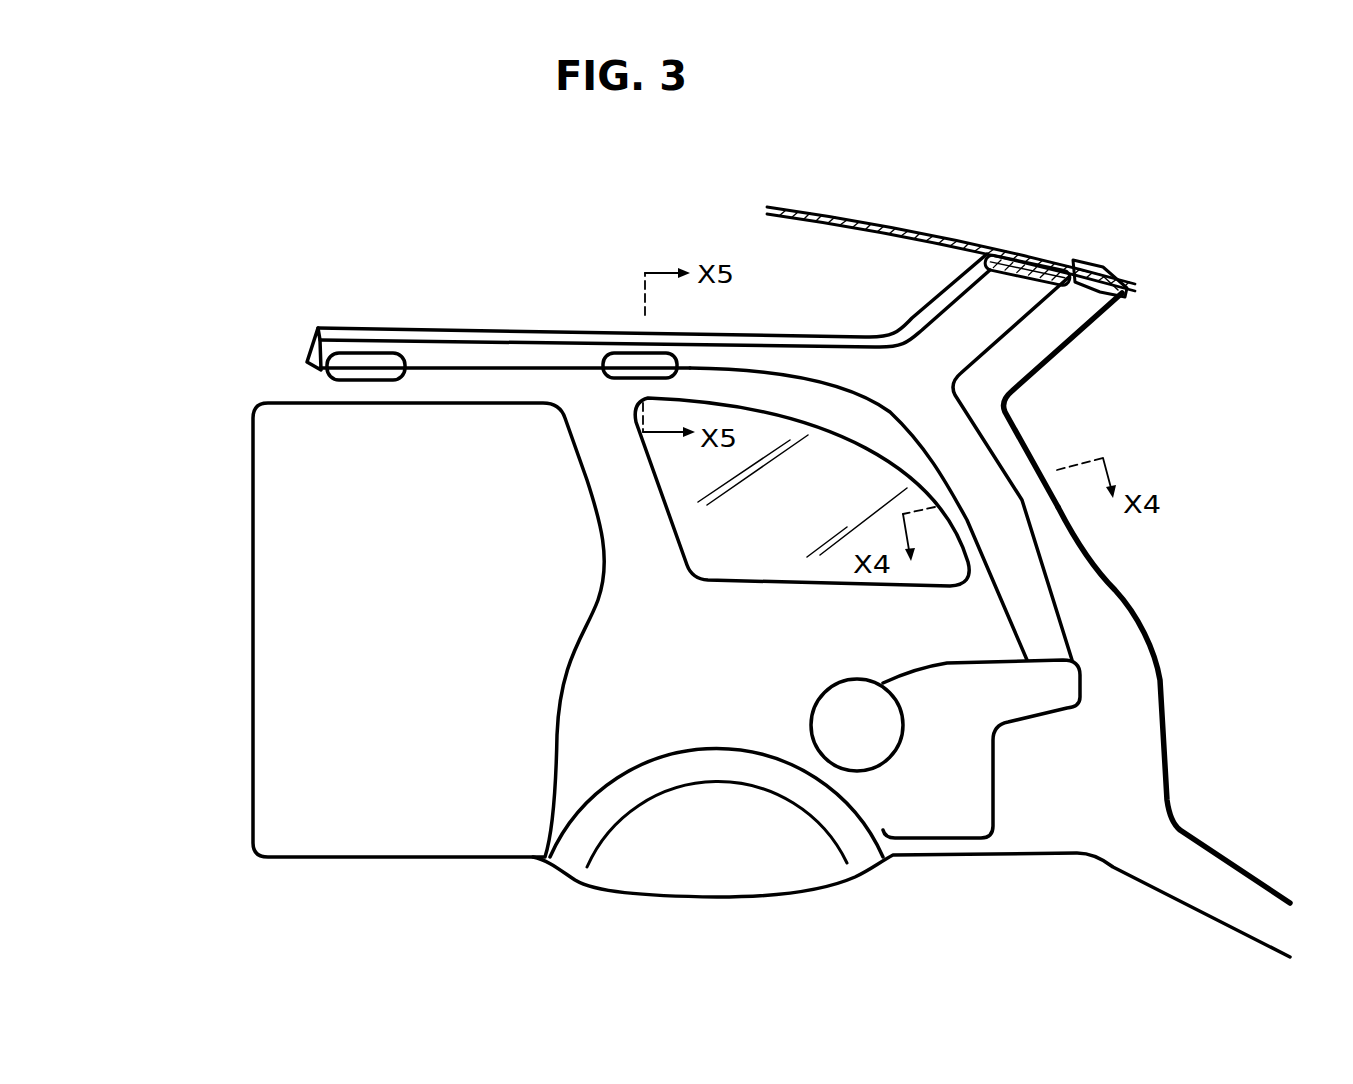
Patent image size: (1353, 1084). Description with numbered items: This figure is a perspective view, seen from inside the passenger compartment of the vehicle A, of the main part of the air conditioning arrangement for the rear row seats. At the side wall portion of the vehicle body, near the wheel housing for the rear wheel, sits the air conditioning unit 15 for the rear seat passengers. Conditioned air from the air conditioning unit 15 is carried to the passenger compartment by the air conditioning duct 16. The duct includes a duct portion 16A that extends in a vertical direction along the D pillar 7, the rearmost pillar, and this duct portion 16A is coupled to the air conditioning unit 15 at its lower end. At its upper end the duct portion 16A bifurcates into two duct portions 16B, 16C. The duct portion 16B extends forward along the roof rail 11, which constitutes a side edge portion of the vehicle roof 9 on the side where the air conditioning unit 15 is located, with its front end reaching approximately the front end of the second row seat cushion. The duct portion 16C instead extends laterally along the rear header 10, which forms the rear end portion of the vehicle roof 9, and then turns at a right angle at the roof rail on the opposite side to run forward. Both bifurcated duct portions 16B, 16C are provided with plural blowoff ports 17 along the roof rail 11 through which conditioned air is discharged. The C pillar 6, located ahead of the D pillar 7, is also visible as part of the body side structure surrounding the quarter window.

The vehicle roof 9 is at (797, 211).
The duct portion 16C is at (957, 313).
The duct portion 16B is at (533, 340).
The roof rail 11 is at (447, 383).
The blowoff ports 17 is at (372, 368).
The rear header 10 is at (1052, 327).
The D pillar 7 is at (1015, 452).
The air conditioning duct 16 is at (1158, 705).
The duct portion 16A is at (1174, 705).
The C pillar 6 is at (603, 483).
The air conditioning unit 15 is at (968, 758).
The vehicle A is at (222, 733).